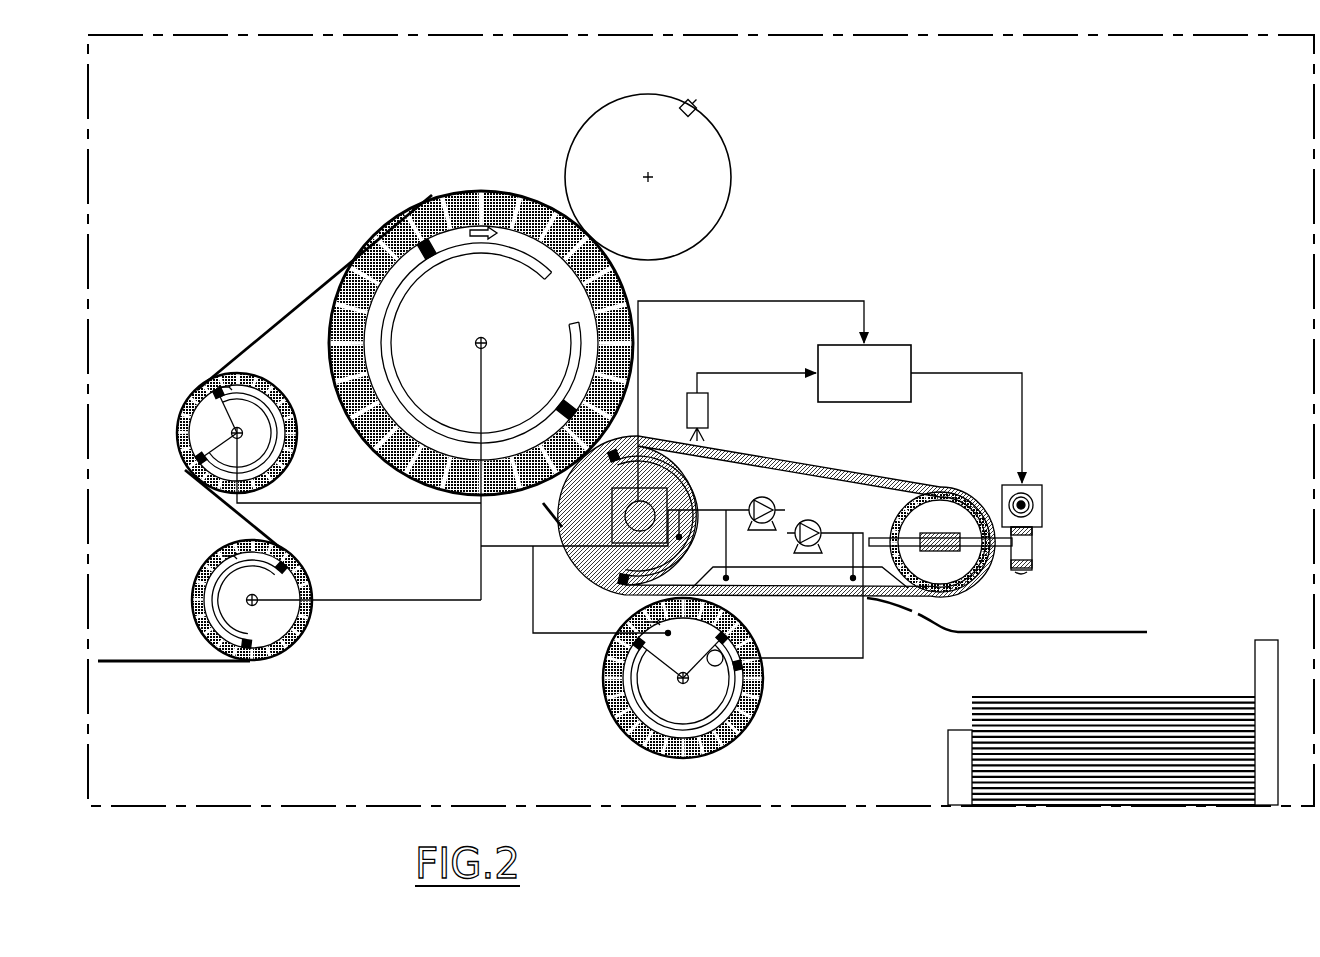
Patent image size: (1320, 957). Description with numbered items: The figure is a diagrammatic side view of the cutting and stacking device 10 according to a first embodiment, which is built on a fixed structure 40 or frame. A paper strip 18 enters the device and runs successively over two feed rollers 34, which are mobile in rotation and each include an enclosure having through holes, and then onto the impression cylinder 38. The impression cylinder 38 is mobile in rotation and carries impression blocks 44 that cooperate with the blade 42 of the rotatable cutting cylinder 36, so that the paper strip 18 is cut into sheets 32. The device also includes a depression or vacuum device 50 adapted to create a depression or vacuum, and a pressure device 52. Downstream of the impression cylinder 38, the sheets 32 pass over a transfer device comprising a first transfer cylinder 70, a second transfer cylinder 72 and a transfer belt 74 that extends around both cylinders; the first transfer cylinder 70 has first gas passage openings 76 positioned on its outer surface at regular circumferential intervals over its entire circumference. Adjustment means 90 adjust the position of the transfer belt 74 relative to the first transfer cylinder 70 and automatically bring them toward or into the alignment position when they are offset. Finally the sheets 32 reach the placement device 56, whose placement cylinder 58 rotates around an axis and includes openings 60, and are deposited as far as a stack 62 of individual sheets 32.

The cutting and stacking device 10 is at (1113, 747).
The paper strip 18 is at (133, 658).
The sheets 32 is at (1232, 737).
The feed rollers 34 is at (258, 444).
The cutting cylinder 36 is at (715, 178).
The impression cylinder 38 is at (630, 288).
The fixed structure 40 is at (1168, 476).
The blade 42 is at (695, 104).
The impression blocks 44 is at (425, 200).
The depression or vacuum device 50 is at (771, 492).
The pressure device 52 is at (812, 510).
The placement device 56 is at (708, 698).
The placement cylinder 58 is at (683, 708).
The openings 60 is at (670, 695).
The stack 62 is at (1234, 764).
The first transfer cylinder 70 is at (695, 470).
The second transfer cylinder 72 is at (897, 514).
The transfer belt 74 is at (917, 488).
The first gas passage openings 76 is at (622, 585).
The adjustment means 90 is at (952, 331).